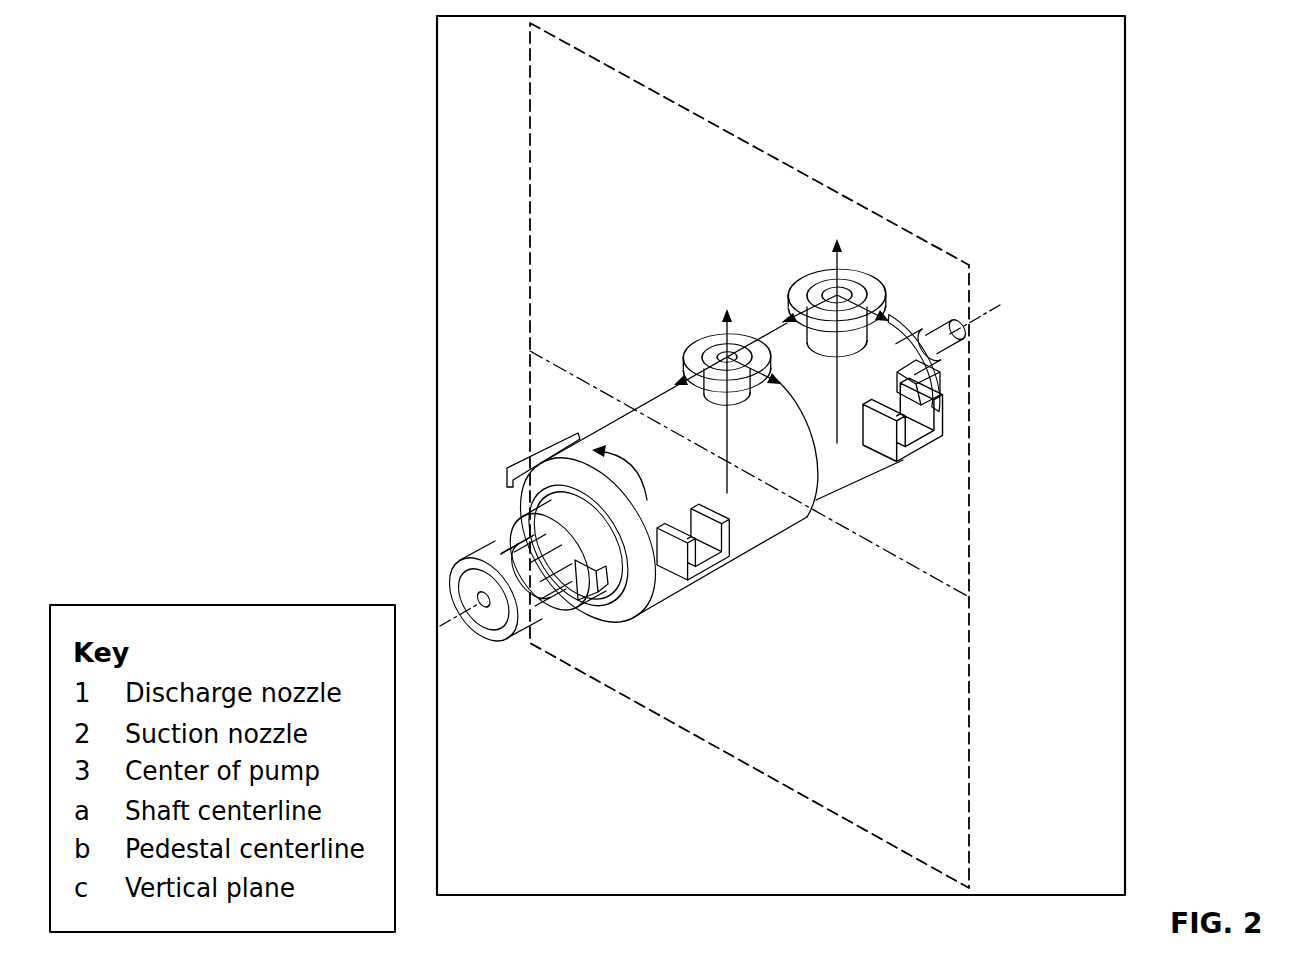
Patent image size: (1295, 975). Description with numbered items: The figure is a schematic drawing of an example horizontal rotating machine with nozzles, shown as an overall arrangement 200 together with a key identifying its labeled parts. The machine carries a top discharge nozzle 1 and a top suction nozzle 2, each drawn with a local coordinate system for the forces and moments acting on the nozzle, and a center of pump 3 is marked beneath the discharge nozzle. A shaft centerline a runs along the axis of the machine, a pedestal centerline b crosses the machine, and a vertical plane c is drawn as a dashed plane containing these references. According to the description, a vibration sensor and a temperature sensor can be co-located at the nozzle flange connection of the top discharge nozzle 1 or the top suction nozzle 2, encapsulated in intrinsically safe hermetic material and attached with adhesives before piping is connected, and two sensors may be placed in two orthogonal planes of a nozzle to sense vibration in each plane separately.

The pump arrangement 200 is at (132, 70).
The top discharge nozzle 1 is at (718, 365).
The top suction nozzle 2 is at (831, 323).
The center of pump 3 is at (732, 394).
The shaft centerline a is at (728, 456).
The pedestal centerline b is at (749, 474).
The vertical plane c is at (749, 455).